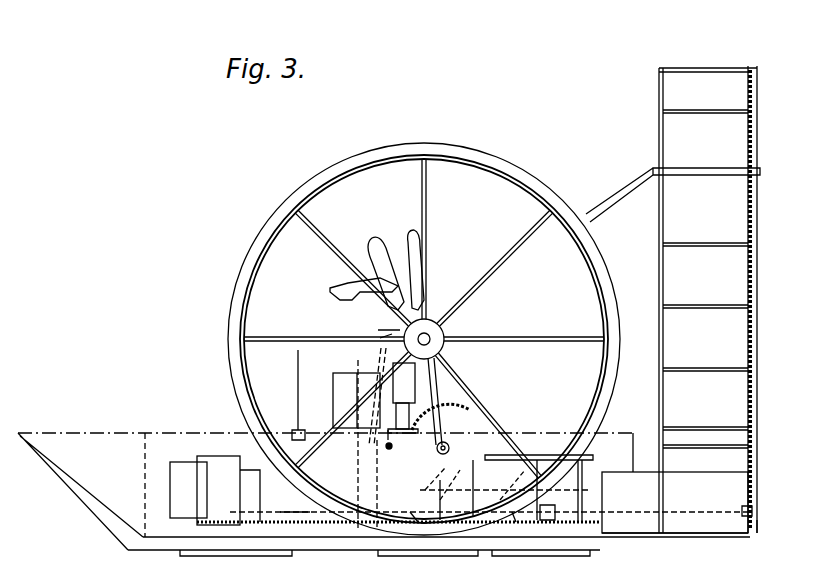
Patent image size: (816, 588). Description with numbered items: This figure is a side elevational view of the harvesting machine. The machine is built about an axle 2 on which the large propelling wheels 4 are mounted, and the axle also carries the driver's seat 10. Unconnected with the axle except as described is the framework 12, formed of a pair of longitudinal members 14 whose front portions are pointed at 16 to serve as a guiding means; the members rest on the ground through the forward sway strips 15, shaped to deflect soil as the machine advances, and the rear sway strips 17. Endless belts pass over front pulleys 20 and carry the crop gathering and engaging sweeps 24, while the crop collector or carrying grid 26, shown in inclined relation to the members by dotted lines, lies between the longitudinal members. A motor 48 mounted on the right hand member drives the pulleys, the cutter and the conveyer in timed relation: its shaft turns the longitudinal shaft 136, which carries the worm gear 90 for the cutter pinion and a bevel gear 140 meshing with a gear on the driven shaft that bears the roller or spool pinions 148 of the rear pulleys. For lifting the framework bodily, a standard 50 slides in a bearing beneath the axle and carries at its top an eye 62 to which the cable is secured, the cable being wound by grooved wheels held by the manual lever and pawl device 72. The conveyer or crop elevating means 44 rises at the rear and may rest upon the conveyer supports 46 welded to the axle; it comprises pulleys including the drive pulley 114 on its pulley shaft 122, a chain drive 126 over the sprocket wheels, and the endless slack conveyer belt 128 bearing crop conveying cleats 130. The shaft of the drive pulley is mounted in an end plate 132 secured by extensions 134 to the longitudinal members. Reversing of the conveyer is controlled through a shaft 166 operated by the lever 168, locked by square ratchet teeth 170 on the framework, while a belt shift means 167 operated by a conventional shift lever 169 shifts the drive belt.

The axle 2 is at (442, 338).
The propelling wheels 4 is at (478, 156).
The driver's seat 10 is at (342, 285).
The framework 12 is at (94, 446).
The longitudinal members 14 is at (130, 441).
The forward sway strips 15 is at (232, 548).
The pointed front portions 16 is at (84, 496).
The rear sway strips 17 is at (592, 540).
The front pulleys 20 is at (437, 475).
The crop gathering and engaging sweeps 24 is at (184, 516).
The crop collector or carrying grid 26 is at (410, 508).
The conveyer or crop elevating means 44 is at (652, 123).
The conveyer or elevator supports 46 is at (603, 188).
The motor 48 is at (322, 378).
The standard 50 is at (406, 416).
The eye 62 is at (420, 396).
The manual lever and pawl device 72 is at (378, 240).
The worm gear 90 is at (290, 512).
The drive pulley 114 is at (746, 520).
The pulley shaft 122 is at (752, 510).
The chain drive 126 is at (750, 232).
The endless slack conveyer or elevator belt 128 is at (664, 338).
The crop conveying cleats 130 is at (683, 248).
The end plate 132 is at (758, 528).
The extensions 134 is at (368, 380).
The longitudinal shaft 136 is at (417, 522).
The bevel gear 140 is at (515, 522).
The roller or spool pinions 148 is at (548, 520).
The shaft 166 is at (450, 448).
The belt shift means 167 is at (389, 444).
The lever 168 is at (428, 270).
The shift lever 169 is at (378, 336).
The square ratchet teeth 170 is at (458, 428).